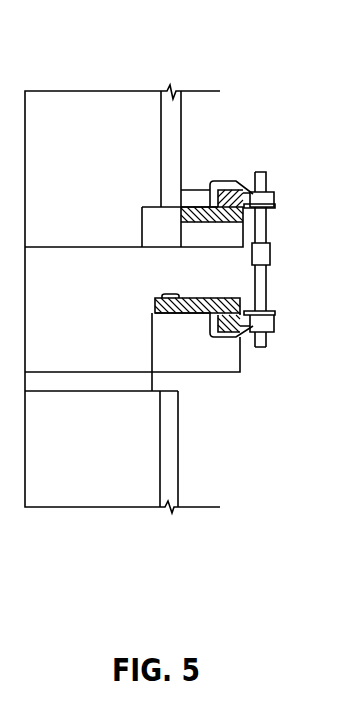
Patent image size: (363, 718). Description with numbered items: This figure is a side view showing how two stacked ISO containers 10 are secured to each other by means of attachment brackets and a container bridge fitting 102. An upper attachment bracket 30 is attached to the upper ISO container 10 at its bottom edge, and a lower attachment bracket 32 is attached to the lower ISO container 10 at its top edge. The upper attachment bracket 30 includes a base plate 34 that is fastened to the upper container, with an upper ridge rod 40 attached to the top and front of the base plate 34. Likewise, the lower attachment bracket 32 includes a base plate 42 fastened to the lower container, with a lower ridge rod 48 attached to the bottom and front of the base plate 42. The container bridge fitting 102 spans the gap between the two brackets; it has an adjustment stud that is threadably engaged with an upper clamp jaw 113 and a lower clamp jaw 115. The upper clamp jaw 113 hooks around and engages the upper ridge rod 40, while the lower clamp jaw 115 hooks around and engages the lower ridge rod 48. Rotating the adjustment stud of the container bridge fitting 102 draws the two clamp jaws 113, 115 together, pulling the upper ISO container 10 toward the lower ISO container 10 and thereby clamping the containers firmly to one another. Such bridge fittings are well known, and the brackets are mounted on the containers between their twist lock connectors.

The ISO container 10 is at (113, 90).
The upper attachment bracket 30 is at (193, 187).
The upper clamp jaw 113 is at (231, 191).
The upper ridge rod 40 is at (247, 186).
The base plate 34 is at (244, 209).
The base plate 42 is at (217, 298).
The container bridge fitting 102 is at (266, 290).
The lower ridge rod 48 is at (243, 340).
The lower clamp jaw 115 is at (230, 336).
The lower attachment bracket 32 is at (190, 369).